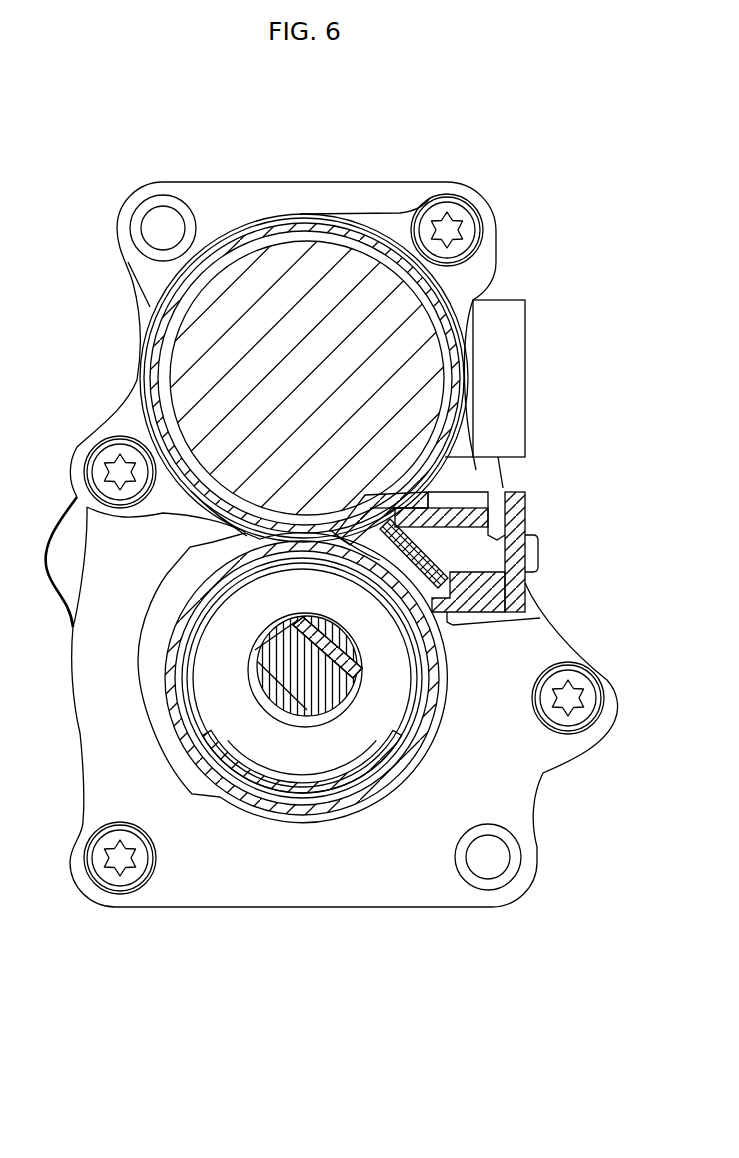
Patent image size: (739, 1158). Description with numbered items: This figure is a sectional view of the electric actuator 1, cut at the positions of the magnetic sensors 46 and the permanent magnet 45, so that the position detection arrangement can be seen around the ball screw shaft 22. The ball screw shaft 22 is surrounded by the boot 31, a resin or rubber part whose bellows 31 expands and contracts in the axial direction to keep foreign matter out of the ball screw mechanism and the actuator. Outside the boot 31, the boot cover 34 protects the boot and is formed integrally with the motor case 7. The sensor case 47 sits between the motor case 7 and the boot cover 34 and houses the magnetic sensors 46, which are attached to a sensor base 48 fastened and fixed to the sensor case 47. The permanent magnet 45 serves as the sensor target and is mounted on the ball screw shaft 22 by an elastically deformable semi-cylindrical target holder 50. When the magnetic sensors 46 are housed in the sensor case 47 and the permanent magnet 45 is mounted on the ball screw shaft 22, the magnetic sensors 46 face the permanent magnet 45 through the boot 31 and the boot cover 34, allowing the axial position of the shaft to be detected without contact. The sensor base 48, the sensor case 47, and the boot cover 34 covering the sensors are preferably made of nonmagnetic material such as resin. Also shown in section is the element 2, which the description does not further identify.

The electric actuator 1 is at (516, 168).
The motor 2 is at (220, 357).
The motor case 7 is at (277, 238).
The ball screw shaft 22 is at (310, 708).
The boot 31 is at (249, 784).
The boot cover 34 is at (383, 790).
The permanent magnet 45 is at (335, 633).
The magnetic sensors 46 is at (451, 568).
The sensor case 47 is at (471, 500).
The sensor base 48 is at (513, 582).
The target holder 50 is at (352, 692).